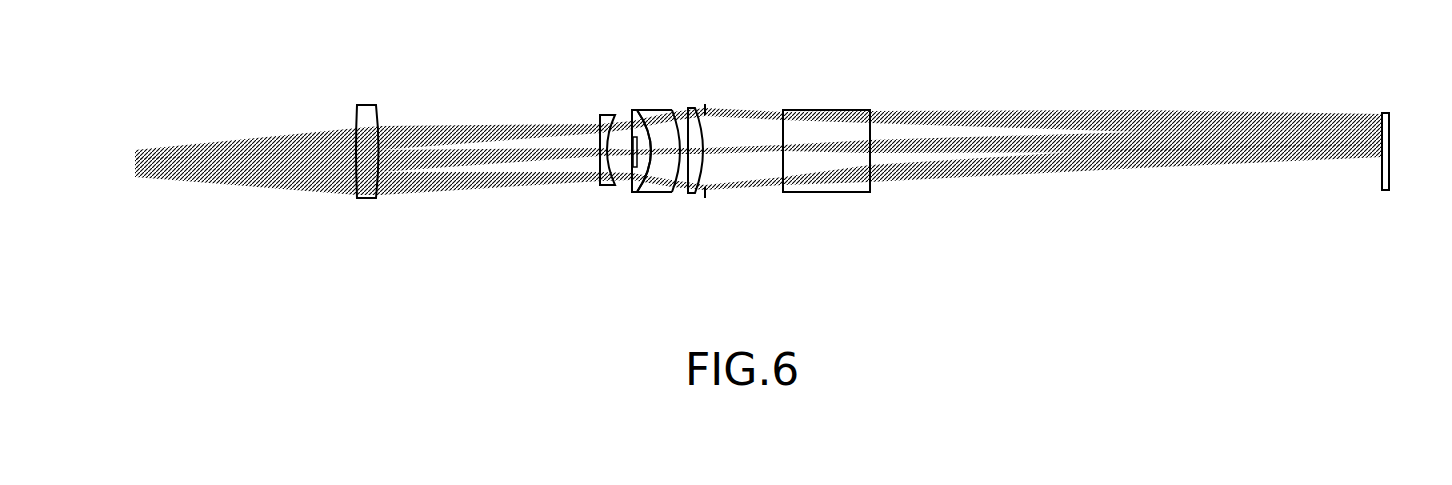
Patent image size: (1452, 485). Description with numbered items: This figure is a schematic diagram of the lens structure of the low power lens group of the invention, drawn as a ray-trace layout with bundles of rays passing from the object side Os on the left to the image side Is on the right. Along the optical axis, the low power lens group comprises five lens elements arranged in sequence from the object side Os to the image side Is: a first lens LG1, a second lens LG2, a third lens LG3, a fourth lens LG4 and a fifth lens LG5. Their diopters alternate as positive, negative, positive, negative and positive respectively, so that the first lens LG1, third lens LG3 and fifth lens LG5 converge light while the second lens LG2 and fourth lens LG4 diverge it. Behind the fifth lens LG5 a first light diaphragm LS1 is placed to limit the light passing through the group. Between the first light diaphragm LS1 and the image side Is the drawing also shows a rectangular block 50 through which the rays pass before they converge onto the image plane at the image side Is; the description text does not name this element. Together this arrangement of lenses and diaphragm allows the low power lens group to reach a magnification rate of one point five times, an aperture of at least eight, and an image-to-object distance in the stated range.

The object side Os is at (133, 165).
The first lens LG1 is at (368, 120).
The second lens LG2 is at (612, 114).
The third lens LG3 is at (647, 120).
The fourth lens LG4 is at (660, 123).
The fifth lens LG5 is at (700, 112).
The first light diaphragm LS1 is at (706, 108).
The prism / optical block 50 is at (837, 130).
The image side Is is at (1390, 167).